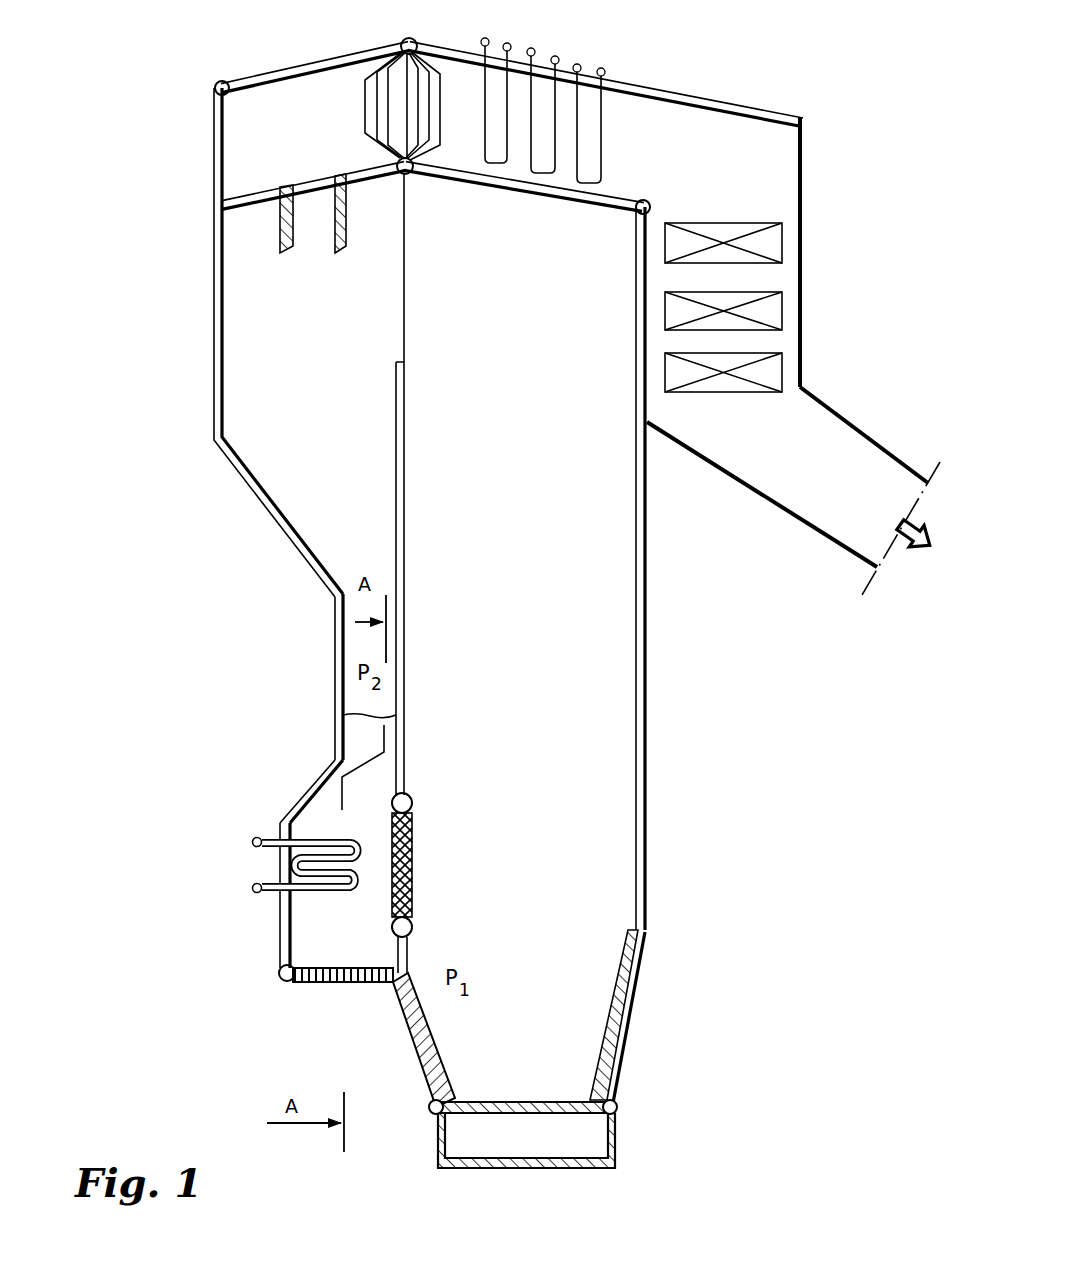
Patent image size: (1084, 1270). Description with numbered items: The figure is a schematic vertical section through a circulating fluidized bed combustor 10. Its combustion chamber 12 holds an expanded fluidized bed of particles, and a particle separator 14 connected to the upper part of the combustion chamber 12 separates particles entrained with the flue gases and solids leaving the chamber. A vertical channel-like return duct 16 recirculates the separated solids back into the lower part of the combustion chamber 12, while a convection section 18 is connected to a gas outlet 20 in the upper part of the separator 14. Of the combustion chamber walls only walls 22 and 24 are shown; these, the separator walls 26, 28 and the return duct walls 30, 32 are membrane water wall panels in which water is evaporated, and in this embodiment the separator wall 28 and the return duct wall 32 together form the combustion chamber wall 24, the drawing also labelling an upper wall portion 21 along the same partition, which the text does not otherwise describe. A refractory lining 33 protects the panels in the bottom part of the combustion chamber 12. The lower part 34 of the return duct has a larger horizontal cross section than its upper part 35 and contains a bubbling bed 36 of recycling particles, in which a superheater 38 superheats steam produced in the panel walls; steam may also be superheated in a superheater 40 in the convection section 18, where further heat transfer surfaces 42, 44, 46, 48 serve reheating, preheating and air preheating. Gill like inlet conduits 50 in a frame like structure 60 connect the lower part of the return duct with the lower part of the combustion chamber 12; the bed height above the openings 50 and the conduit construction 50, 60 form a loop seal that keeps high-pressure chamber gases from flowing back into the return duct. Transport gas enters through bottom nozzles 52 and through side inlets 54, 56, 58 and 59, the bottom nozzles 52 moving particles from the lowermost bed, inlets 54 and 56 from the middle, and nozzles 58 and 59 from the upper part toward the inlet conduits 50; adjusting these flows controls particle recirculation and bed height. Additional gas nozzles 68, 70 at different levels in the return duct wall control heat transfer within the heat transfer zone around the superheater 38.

The circulating fluidized bed combustor 10 is at (181, 155).
The combustion chamber 12 is at (521, 625).
The particle separator 14 is at (330, 365).
The return duct 16 is at (355, 633).
The convection section 18 is at (708, 133).
The gas outlet 20 is at (283, 238).
The partition wall 21 is at (407, 268).
The wall of the combustion chamber 22 is at (643, 650).
The wall of the combustion chamber 24 is at (397, 572).
The wall of the particle separator 26 is at (225, 402).
The wall of the particle separator 28 is at (395, 429).
The wall of the return duct 30 is at (340, 683).
The wall of the return duct 32 is at (403, 760).
The refractory lining 33 is at (598, 1076).
The lower part of the return duct 34 is at (322, 810).
The upper part of the return duct 35 is at (358, 652).
The bubbling bed 36 is at (365, 937).
The superheater 38 is at (335, 890).
The superheater 40 is at (428, 63).
The heat transfer surface 42 is at (558, 63).
The heat transfer surface 44 is at (780, 242).
The heat transfer surface 46 is at (780, 308).
The heat transfer surface 48 is at (777, 370).
The gill like inlet conduits 50 is at (410, 818).
The bottom nozzles 52 is at (323, 985).
The inlet 54 is at (276, 953).
The inlet 56 is at (276, 925).
The inlet 58 is at (276, 822).
The inlet 59 is at (325, 763).
The frame like structure 60 is at (412, 852).
The gas nozzle 68 is at (276, 898).
The gas nozzle 70 is at (276, 858).